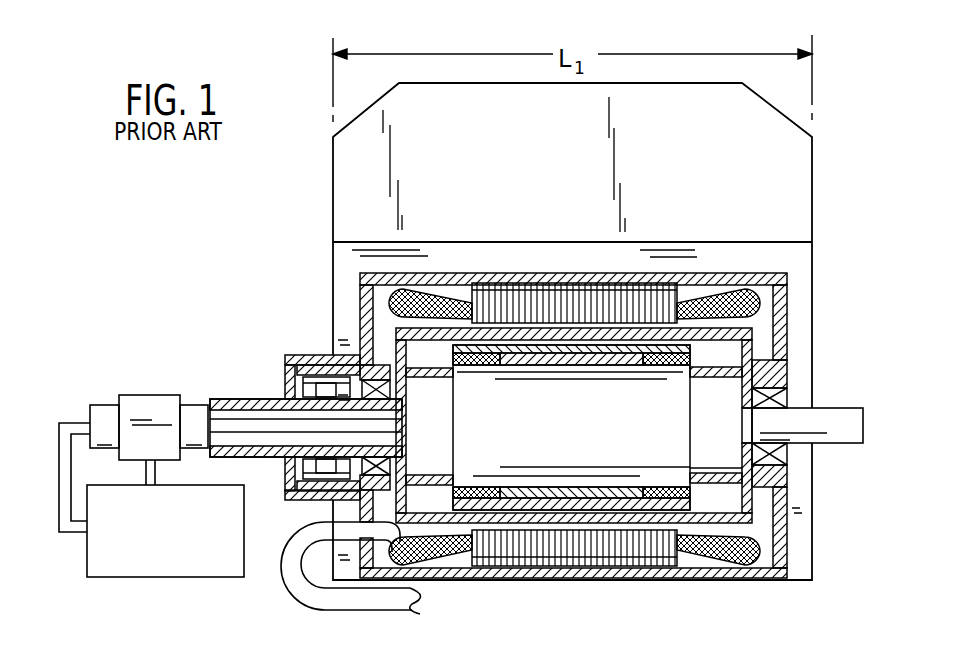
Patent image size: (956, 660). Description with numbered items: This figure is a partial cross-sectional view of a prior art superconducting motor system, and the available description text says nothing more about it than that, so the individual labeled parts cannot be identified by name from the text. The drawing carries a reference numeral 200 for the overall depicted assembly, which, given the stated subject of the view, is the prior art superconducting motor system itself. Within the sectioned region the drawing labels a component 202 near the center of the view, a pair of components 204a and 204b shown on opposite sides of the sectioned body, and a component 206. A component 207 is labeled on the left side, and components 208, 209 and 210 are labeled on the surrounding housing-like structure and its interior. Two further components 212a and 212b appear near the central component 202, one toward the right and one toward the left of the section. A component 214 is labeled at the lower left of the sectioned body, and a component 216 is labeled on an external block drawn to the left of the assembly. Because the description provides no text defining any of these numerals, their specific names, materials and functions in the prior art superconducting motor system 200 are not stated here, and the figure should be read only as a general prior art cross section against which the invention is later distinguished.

The motor assembly 200 is at (836, 233).
The rotor 202 is at (580, 366).
The output shaft 204a is at (838, 430).
The input shaft 204b is at (251, 399).
The rotor end plate 206 is at (690, 356).
The bearing housing 207 is at (325, 428).
The stator housing 208 is at (717, 530).
The inner frame 209 is at (515, 335).
The stator windings 210 is at (742, 568).
The bearing 212a is at (717, 472).
The bearing 212b is at (422, 378).
The cable conduit 214 is at (268, 440).
The controller 216 is at (155, 560).